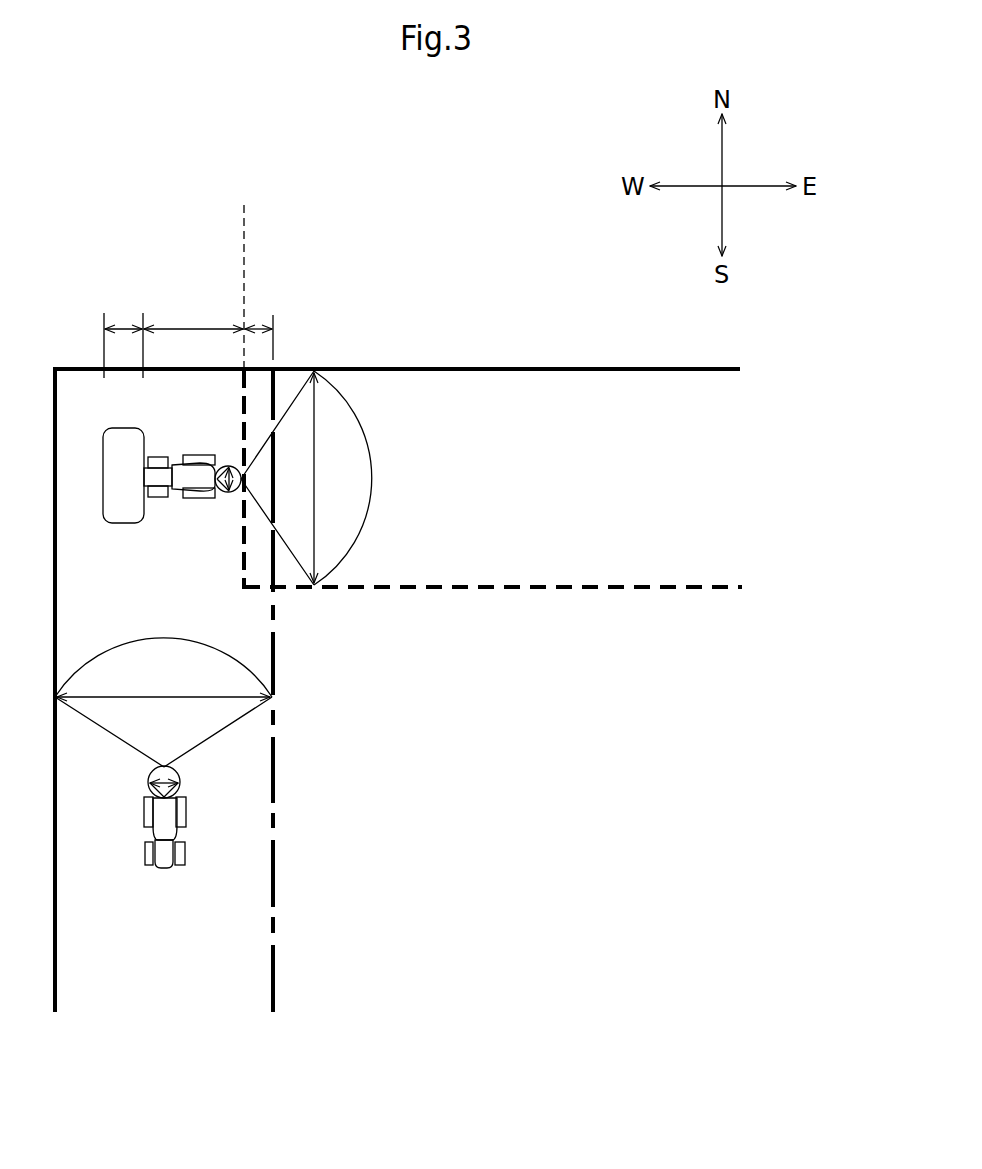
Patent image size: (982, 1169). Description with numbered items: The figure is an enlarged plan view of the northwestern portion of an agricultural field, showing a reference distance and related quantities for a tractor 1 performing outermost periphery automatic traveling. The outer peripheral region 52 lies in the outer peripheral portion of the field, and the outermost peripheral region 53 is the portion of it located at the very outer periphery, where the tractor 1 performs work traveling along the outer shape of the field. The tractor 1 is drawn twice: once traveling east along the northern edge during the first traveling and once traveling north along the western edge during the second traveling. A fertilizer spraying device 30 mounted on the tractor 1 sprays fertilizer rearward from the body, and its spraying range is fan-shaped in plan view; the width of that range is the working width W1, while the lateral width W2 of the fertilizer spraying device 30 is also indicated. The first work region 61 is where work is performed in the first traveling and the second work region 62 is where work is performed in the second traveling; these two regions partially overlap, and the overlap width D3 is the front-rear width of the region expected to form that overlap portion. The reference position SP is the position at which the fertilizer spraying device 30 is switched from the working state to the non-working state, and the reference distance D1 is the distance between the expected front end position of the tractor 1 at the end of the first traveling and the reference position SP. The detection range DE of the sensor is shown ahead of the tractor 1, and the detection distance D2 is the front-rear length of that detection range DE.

The tractor 1 is at (178, 466).
The fertilizer spraying device 30 is at (233, 466).
The outer peripheral region 52 is at (482, 759).
The outermost peripheral region 53 is at (517, 405).
The first work region 61 is at (505, 590).
The second work region 62 is at (274, 767).
The detection range DE is at (123, 524).
The reference position SP is at (245, 272).
The working width W1 is at (213, 569).
The lateral width W2 is at (207, 496).
The reference distance D1 is at (193, 311).
The detection distance D2 is at (123, 336).
The overlap width D3 is at (258, 354).